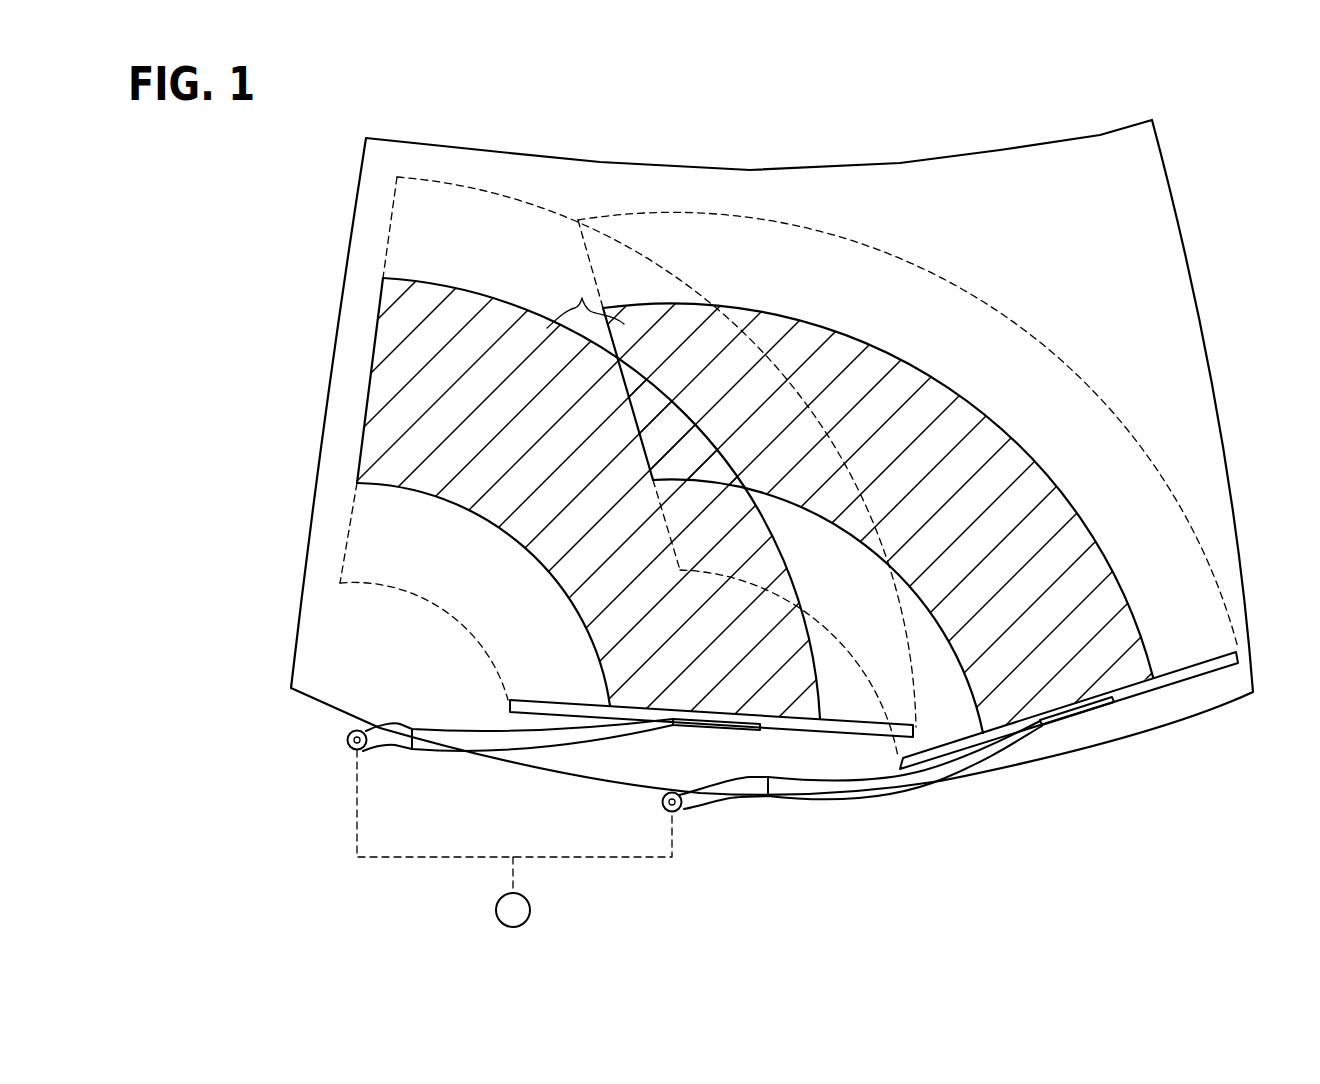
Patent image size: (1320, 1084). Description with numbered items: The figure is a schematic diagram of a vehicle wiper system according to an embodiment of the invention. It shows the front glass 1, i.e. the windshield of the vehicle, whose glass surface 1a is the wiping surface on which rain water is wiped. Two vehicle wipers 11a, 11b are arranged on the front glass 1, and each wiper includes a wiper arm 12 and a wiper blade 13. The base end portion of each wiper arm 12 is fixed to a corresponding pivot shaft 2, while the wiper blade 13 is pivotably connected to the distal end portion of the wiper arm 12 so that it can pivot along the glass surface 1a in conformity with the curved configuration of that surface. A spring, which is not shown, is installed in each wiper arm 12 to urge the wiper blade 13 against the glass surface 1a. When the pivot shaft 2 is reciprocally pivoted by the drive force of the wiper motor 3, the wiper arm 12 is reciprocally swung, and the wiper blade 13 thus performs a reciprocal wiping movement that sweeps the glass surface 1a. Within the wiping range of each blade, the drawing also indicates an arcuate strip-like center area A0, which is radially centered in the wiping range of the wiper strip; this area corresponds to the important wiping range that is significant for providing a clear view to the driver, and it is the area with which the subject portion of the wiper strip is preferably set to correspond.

The front glass 1 is at (1076, 134).
The glass surface 1a is at (908, 266).
The arcuate strip-like center area A0 is at (585, 299).
The pivot shaft 2 is at (349, 739).
The wiper motor 3 is at (531, 910).
The vehicle wiper 11a is at (516, 751).
The vehicle wiper 11b is at (843, 798).
The wiper arm 12 is at (570, 740).
The wiper blade 13 is at (830, 718).